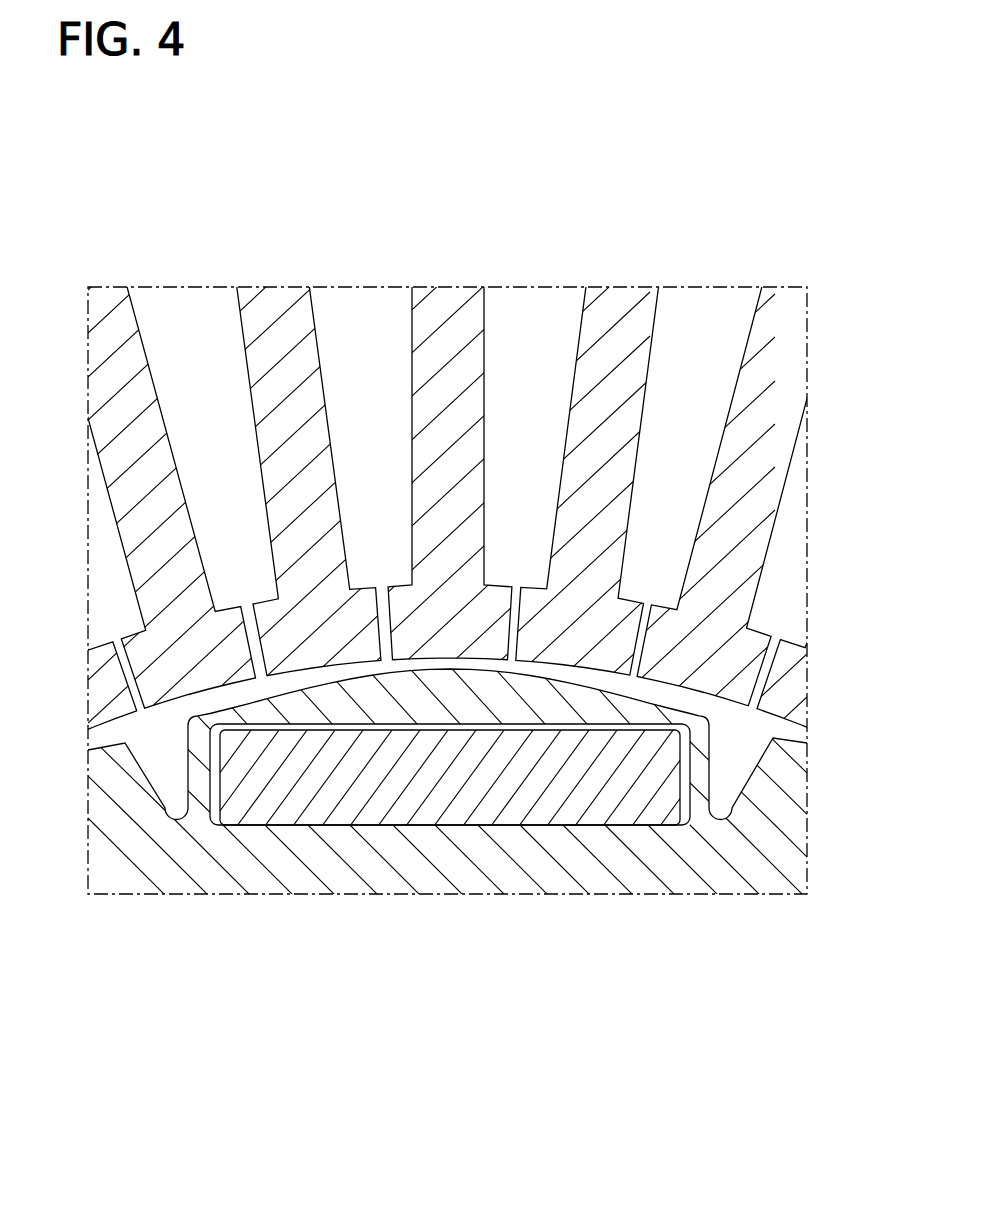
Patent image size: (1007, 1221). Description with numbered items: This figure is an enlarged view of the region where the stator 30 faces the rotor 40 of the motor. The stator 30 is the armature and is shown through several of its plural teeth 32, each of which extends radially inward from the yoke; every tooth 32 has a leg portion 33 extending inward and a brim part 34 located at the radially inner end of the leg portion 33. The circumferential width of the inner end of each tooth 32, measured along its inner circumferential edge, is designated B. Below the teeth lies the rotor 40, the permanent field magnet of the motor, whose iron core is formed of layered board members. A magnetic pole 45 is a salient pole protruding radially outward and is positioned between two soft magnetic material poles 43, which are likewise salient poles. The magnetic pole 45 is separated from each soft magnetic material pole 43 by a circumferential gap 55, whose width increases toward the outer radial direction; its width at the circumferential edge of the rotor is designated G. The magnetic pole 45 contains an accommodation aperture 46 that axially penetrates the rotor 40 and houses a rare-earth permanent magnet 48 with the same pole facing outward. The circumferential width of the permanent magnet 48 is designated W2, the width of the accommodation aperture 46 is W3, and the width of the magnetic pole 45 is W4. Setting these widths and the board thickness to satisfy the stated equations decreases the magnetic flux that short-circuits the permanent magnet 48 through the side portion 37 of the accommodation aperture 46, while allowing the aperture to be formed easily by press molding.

The stator 30 is at (787, 591).
The tooth 32 is at (232, 325).
The leg portion 33 is at (126, 322).
The brim part 34 is at (490, 603).
The side portion 37 is at (735, 738).
The rotor 40 is at (823, 868).
The soft magnetic material pole 43 is at (792, 806).
The magnetic pole 45 is at (438, 683).
The accommodation aperture 46 is at (183, 814).
The permanent magnet 48 is at (632, 787).
The gap 55 is at (740, 765).
The circumferential width of the gap G is at (149, 676).
The circumferential width of the inner end of each tooth B is at (382, 661).
The circumferential width of the permanent magnet W2 is at (667, 962).
The circumferential width of the accommodation aperture W3 is at (676, 1005).
The circumferential width of the magnetic pole W4 is at (695, 1048).